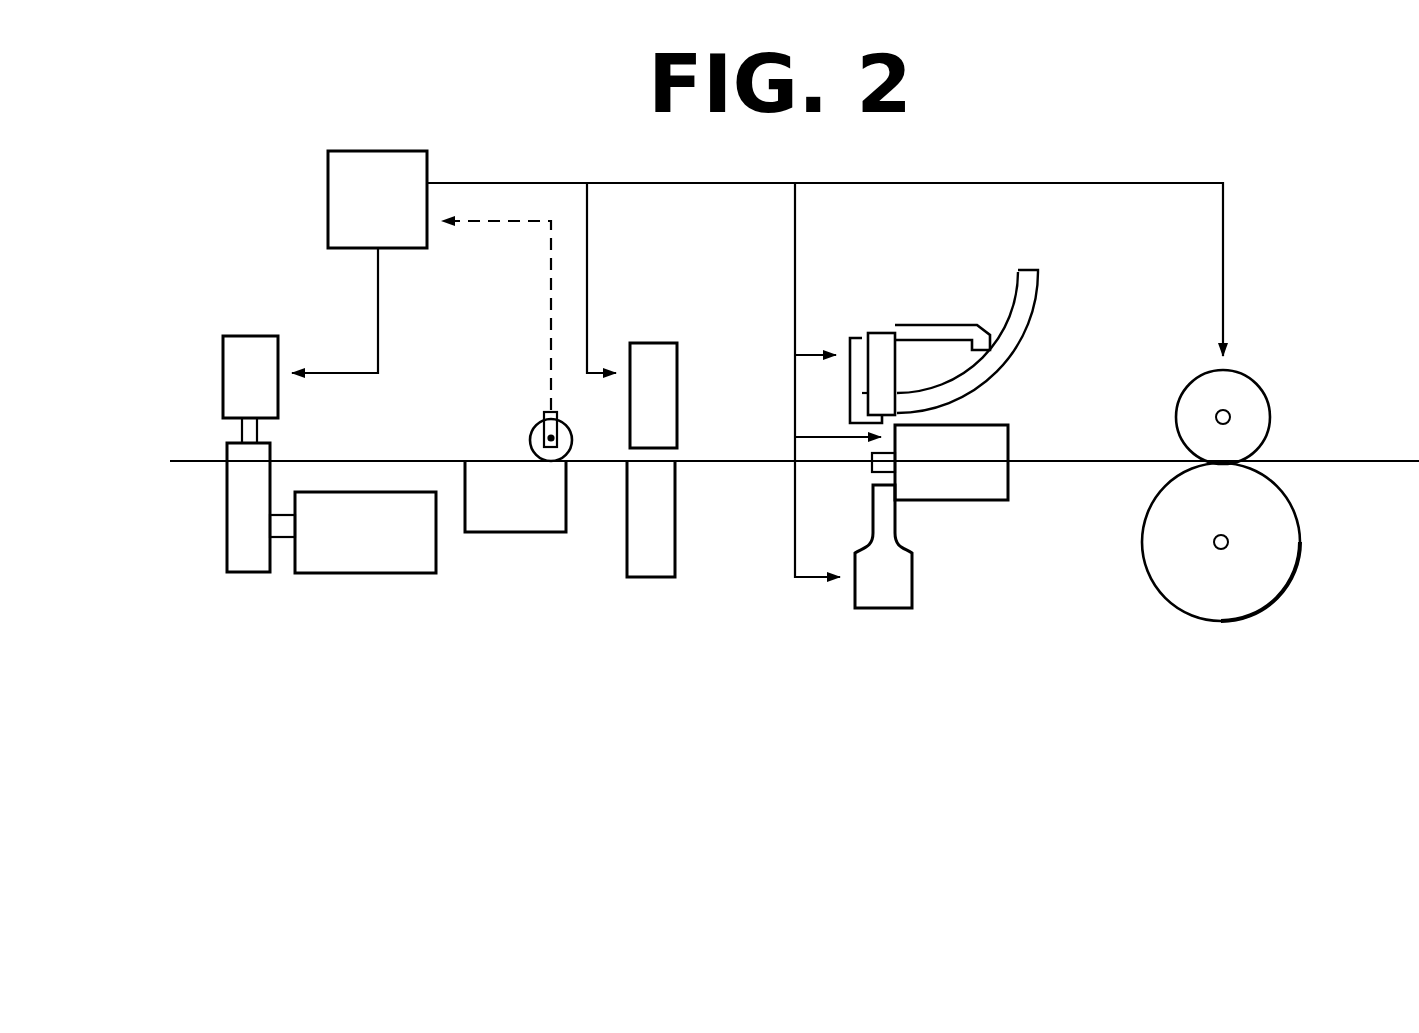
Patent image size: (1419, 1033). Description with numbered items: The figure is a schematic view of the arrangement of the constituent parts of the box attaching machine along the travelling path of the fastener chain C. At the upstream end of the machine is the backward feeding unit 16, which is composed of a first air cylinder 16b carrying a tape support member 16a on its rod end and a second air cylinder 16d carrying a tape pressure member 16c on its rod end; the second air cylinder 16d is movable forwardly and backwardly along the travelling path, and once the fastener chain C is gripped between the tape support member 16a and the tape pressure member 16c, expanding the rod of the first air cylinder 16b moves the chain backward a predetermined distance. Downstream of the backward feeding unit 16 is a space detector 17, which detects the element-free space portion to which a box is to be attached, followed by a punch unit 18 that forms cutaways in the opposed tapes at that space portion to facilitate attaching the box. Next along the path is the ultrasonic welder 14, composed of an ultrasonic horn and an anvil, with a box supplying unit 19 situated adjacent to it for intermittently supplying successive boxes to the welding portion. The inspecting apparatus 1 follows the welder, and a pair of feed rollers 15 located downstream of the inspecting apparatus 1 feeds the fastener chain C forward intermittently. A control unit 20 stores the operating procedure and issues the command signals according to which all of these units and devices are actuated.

The control unit 20 is at (428, 163).
The backward feeding unit 16 is at (259, 477).
The tape support member 16a is at (232, 498).
The first air cylinder 16b is at (352, 552).
The tape pressure member 16c is at (236, 451).
The second air cylinder 16d is at (252, 358).
The space detector 17 is at (532, 400).
The punch unit 18 is at (656, 326).
The box supplying unit 19 is at (905, 314).
The inspecting apparatus 1 is at (991, 510).
The ultrasonic welder 14 is at (883, 622).
The feed rollers 15 is at (1271, 634).
The fastener chain C is at (1333, 461).